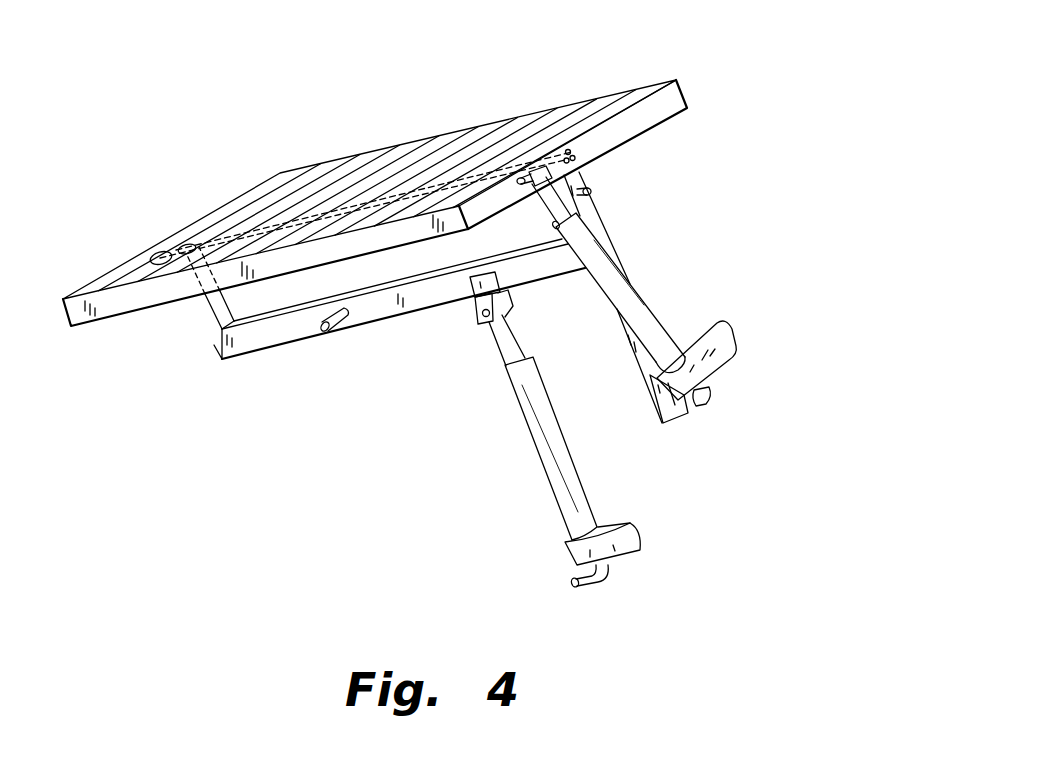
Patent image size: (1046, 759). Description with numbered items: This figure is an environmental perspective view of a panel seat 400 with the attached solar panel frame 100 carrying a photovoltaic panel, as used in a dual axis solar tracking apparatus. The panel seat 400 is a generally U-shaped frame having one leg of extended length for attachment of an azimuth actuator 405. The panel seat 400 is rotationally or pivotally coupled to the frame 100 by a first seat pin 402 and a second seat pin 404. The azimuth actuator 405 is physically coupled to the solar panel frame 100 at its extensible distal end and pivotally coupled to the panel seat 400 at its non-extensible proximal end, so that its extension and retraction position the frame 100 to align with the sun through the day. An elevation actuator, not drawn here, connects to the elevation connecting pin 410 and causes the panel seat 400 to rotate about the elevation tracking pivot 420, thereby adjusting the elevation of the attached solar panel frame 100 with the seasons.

The frame 100 is at (680, 80).
The panel seat 400 is at (762, 224).
The first seat pin 402 is at (152, 258).
The second seat pin 404 is at (590, 192).
The azimuth actuator 405 is at (660, 317).
The elevation connecting pin 410 is at (483, 315).
The elevation tracking pivot 420 is at (323, 323).